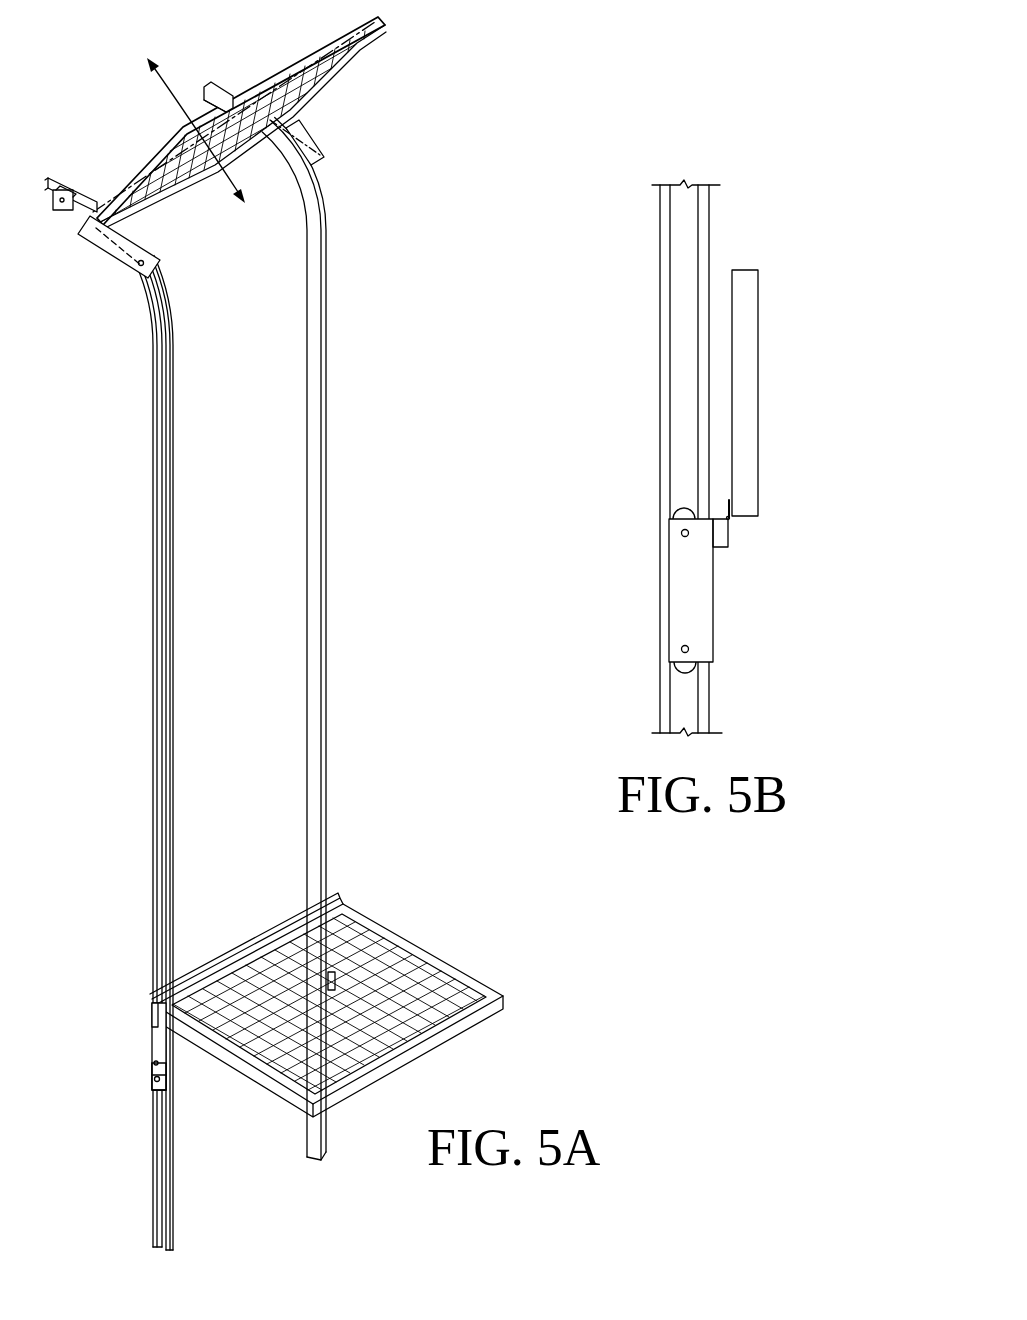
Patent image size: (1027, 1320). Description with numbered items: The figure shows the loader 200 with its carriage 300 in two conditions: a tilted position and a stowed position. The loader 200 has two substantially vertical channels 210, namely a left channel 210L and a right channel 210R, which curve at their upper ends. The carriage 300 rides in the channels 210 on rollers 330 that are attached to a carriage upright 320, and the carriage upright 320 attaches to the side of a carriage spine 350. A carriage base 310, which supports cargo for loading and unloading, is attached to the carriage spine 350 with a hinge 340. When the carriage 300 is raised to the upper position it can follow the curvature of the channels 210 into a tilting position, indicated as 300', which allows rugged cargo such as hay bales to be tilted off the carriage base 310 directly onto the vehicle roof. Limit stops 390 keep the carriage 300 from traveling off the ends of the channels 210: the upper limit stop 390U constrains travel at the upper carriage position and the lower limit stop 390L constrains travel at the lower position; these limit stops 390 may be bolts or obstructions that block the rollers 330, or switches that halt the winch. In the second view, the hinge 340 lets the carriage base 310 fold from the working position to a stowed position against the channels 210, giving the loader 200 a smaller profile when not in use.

In FIG. 5A, the loader 200 is at (264, 684).
In FIG. 5B, the loader 200 is at (737, 453).
In FIG. 5A, the channels 210 is at (197, 684).
In FIG. 5B, the channels 210 is at (667, 280).
In FIG. 5A, the left channel 210L is at (160, 858).
In FIG. 5A, the right channel 210R is at (314, 747).
In FIG. 5A, the carriage 300 is at (270, 993).
In FIG. 5B, the carriage 300 is at (722, 494).
In FIG. 5A, the tilting position of carriage 300' is at (252, 122).
In FIG. 5A, the carriage base 310 is at (418, 1048).
In FIG. 5B, the carriage base 310 is at (750, 423).
In FIG. 5A, the carriage upright 320 is at (155, 1040).
In FIG. 5B, the carriage upright 320 is at (683, 603).
In FIG. 5B, the rollers 330 is at (677, 513).
In FIG. 5A, the hinge 340 is at (275, 940).
In FIG. 5B, the hinge 340 is at (728, 516).
In FIG. 5A, the carriage spine 350 is at (150, 1018).
In FIG. 5B, the carriage spine 350 is at (725, 538).
In FIG. 5A, the limit stops 390 is at (229, 92).
In FIG. 5A, the upper limit stop 390U is at (72, 213).
In FIG. 5A, the lower limit stop 390L is at (152, 1083).